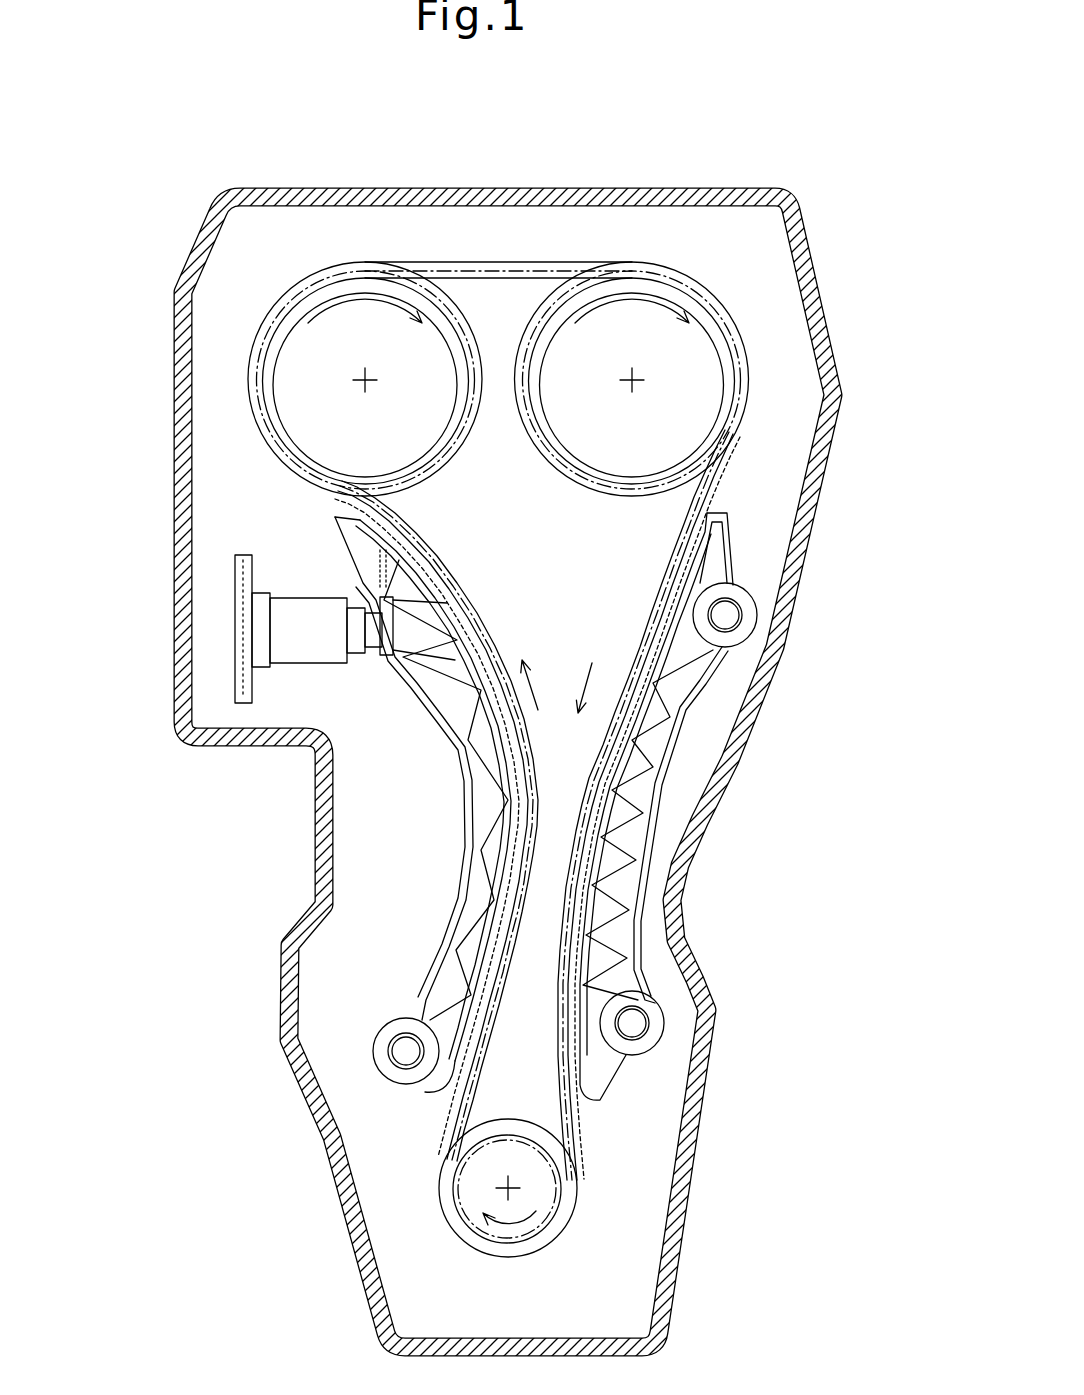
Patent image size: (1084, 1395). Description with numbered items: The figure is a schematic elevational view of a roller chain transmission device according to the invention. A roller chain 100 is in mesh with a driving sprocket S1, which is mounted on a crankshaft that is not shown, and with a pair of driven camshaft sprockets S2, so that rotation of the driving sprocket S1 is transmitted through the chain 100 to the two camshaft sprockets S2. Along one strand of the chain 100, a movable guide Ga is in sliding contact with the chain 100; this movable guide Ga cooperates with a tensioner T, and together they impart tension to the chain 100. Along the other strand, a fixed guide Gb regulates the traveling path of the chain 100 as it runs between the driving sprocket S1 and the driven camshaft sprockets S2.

The roller chain 100 is at (516, 262).
The driven camshaft sprocket S2 is at (283, 377).
The driving sprocket S1 is at (543, 1188).
The movable guide Ga is at (447, 855).
The fixed guide Gb is at (676, 789).
The tensioner T is at (287, 678).